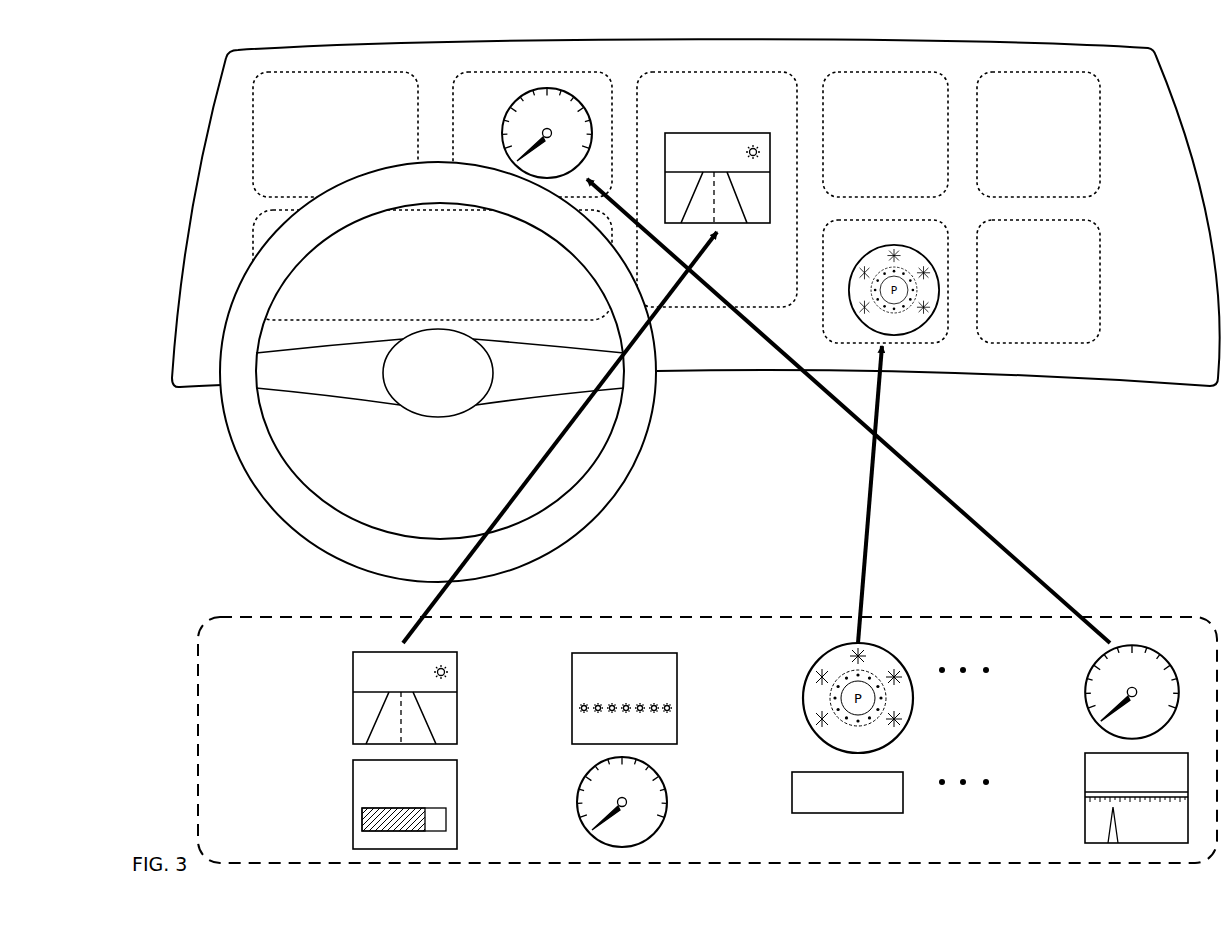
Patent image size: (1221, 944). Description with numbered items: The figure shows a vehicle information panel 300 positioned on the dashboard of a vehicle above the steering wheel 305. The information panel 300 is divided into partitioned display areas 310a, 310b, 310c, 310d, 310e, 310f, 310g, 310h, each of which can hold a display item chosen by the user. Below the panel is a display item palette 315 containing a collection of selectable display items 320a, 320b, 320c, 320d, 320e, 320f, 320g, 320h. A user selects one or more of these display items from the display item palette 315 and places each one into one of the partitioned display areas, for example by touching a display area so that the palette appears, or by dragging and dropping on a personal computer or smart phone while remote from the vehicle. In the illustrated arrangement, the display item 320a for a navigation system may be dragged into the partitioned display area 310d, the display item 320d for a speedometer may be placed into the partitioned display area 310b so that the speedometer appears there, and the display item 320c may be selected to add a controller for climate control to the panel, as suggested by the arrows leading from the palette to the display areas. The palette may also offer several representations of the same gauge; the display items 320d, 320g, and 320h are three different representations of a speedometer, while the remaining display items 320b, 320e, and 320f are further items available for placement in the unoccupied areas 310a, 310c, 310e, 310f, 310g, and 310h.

The information panel 300 is at (222, 76).
The steering wheel 305 is at (295, 470).
The partitioned display area 310a is at (311, 106).
The partitioned display area 310b is at (512, 106).
The partitioned display area 310c is at (458, 241).
The partitioned display area 310d is at (700, 106).
The partitioned display area 310e is at (882, 106).
The partitioned display area 310f is at (1032, 106).
The partitioned display area 310g is at (881, 246).
The partitioned display area 310h is at (1034, 253).
The display item palette 315 is at (218, 618).
The display item 320a is at (353, 680).
The display item 320b is at (572, 680).
The display item 320c is at (793, 680).
The display item 320d is at (1083, 680).
The display item 320e is at (353, 785).
The display item 320f is at (571, 785).
The display item 320g is at (792, 787).
The display item 320h is at (1085, 785).